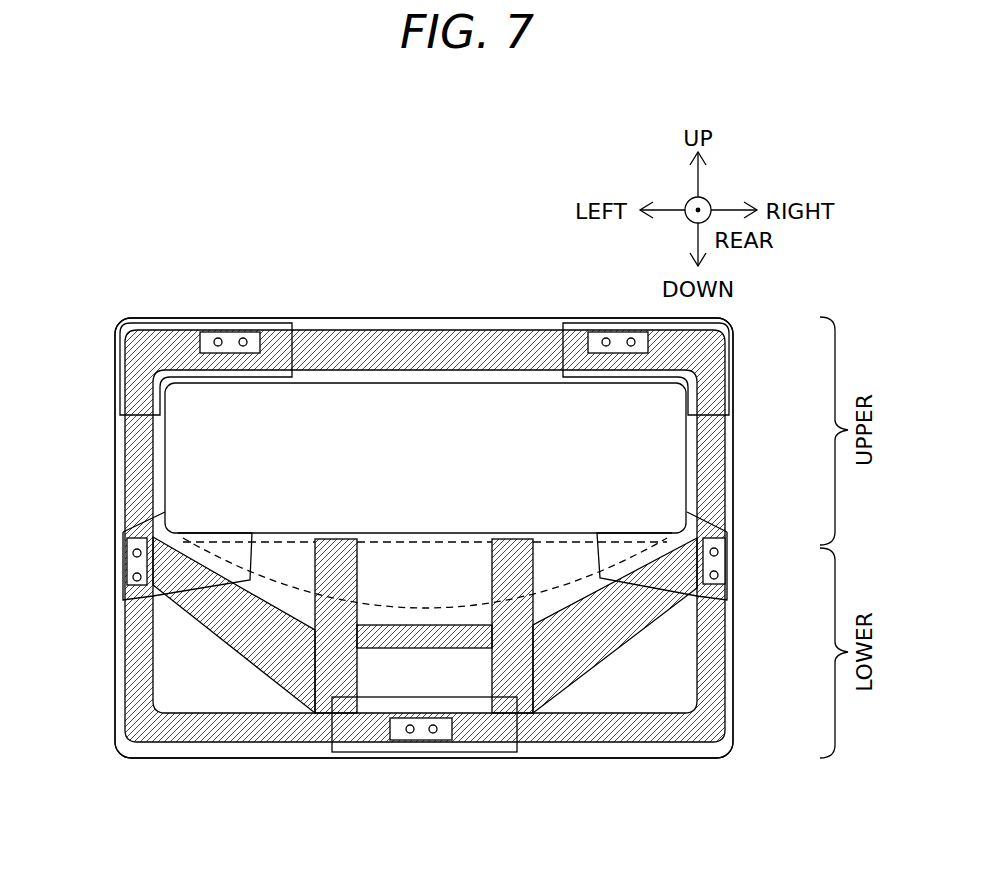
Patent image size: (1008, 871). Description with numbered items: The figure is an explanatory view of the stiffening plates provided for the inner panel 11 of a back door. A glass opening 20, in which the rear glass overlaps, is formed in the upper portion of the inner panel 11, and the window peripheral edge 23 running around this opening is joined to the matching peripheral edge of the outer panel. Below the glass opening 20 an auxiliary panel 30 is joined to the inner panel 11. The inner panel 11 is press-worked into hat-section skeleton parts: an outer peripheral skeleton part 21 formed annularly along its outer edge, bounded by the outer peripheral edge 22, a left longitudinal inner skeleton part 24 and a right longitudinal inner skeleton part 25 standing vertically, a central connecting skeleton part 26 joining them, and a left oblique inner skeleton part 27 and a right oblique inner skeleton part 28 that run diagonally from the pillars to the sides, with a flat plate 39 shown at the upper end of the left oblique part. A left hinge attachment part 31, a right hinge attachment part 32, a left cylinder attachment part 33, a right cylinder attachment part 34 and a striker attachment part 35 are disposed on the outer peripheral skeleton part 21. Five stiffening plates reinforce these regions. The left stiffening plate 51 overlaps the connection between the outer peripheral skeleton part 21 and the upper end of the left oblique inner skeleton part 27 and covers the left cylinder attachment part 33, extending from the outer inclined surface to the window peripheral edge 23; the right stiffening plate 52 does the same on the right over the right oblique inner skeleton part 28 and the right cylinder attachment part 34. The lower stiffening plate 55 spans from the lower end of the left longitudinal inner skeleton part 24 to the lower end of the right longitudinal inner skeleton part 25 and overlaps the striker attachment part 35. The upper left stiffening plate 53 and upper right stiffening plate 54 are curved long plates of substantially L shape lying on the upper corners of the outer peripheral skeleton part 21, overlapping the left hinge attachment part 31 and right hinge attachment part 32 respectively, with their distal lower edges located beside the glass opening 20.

The inner panel 11 is at (415, 286).
The glass opening 20 is at (180, 437).
The outer peripheral skeleton part 21 is at (140, 697).
The outer peripheral edge 22 is at (122, 743).
The window peripheral edge 23 is at (412, 540).
The left longitudinal inner skeleton part 24 is at (333, 670).
The right longitudinal inner skeleton part 25 is at (505, 673).
The central connecting skeleton part 26 is at (473, 637).
The left oblique inner skeleton part 27 is at (243, 655).
The right oblique inner skeleton part 28 is at (588, 662).
The auxiliary panel 30 is at (553, 557).
The left hinge attachment part 31 is at (233, 340).
The right hinge attachment part 32 is at (583, 336).
The left cylinder attachment part 33 is at (134, 576).
The right cylinder attachment part 34 is at (722, 573).
The striker attachment part 35 is at (412, 735).
The left flat plate 39 is at (285, 580).
The left stiffening plate 51 is at (133, 540).
The right stiffening plate 52 is at (718, 522).
The upper left stiffening plate 53 is at (160, 335).
The upper right stiffening plate 54 is at (730, 366).
The lower stiffening plate 55 is at (362, 722).